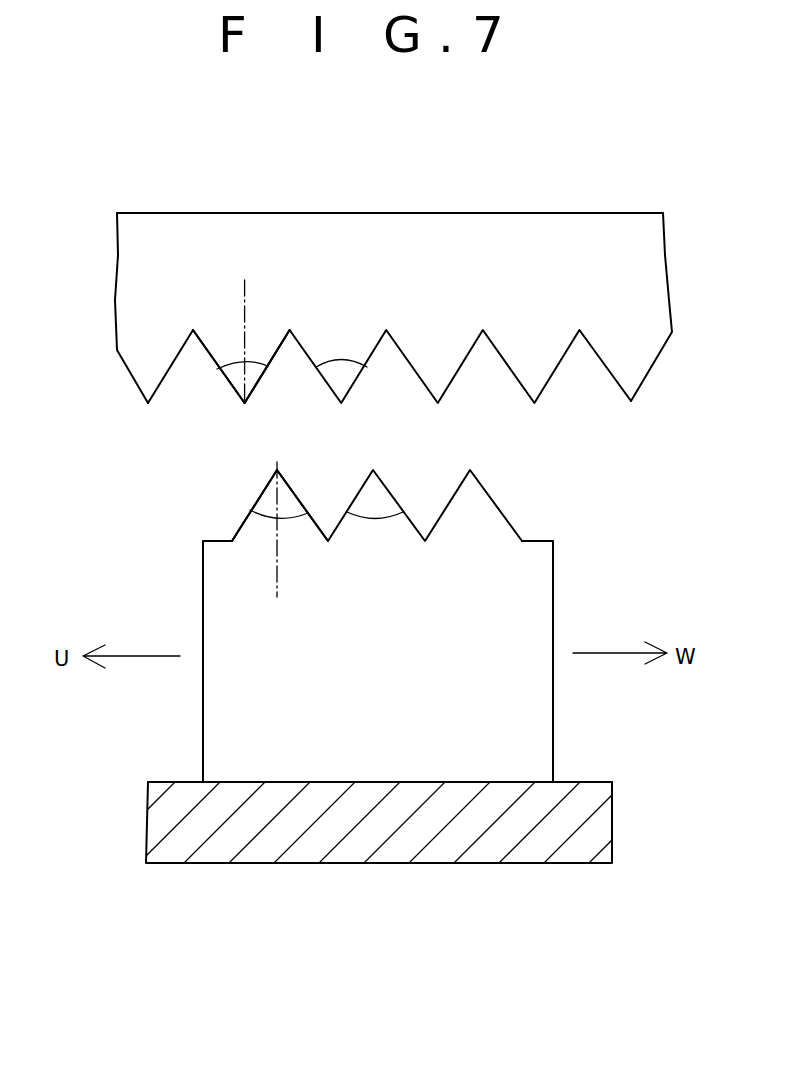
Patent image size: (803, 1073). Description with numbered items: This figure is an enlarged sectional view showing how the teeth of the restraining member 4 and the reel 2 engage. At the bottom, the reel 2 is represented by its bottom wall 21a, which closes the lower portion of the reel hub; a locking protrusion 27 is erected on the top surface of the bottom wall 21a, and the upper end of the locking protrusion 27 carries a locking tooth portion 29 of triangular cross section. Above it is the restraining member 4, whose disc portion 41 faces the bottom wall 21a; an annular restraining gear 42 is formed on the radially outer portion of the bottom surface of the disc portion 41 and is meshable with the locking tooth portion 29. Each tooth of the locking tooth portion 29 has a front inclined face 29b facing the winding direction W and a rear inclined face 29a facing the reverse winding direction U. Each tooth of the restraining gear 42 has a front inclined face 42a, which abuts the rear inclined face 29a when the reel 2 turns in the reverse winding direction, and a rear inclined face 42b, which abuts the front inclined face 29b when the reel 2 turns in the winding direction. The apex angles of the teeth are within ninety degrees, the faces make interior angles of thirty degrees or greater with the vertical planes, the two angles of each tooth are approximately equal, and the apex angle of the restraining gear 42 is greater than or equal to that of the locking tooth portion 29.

The restraining member 4 is at (268, 204).
The disc portion 41 is at (447, 219).
The restraining gear 42 is at (642, 360).
The front inclined face 42a is at (265, 377).
The rear inclined face 42b is at (221, 375).
The locking protrusion 27 is at (553, 595).
The locking tooth portion 29 is at (500, 521).
The rear inclined face 29a is at (263, 491).
The front inclined face 29b is at (295, 495).
The bottom wall 21a is at (590, 790).
The reel 2 is at (443, 873).